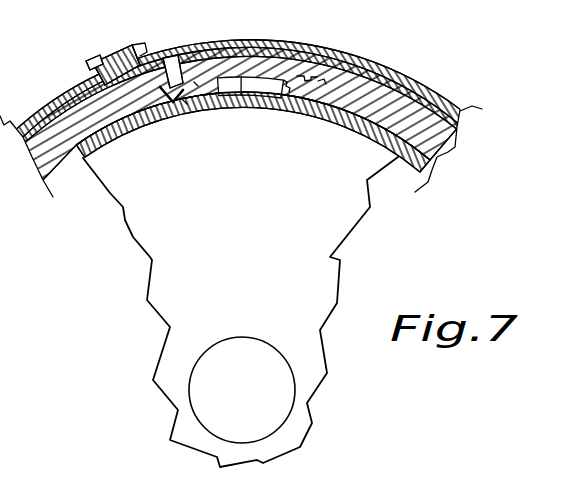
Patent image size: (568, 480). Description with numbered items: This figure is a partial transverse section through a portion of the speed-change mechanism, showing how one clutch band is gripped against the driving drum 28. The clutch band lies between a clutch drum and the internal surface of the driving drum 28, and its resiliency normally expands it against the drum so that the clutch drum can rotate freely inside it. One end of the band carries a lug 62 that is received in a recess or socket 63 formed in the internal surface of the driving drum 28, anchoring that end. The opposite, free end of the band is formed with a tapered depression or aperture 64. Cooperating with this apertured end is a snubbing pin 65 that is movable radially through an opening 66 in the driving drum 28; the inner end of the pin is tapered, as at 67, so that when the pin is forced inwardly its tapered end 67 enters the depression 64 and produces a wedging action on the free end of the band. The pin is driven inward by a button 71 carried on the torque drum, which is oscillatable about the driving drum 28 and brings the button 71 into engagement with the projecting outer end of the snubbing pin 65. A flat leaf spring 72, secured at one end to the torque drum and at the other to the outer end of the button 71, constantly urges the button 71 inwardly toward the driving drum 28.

The driving drum 28 is at (364, 93).
The lug 62 is at (332, 86).
The recess or socket 63 is at (306, 68).
The tapered depression or aperture 64 is at (163, 100).
The snubbing pin 65 is at (194, 83).
The opening 66 is at (188, 72).
The tapered inner end 67 is at (184, 102).
The button 71 is at (120, 63).
The flat leaf spring 72 is at (103, 57).